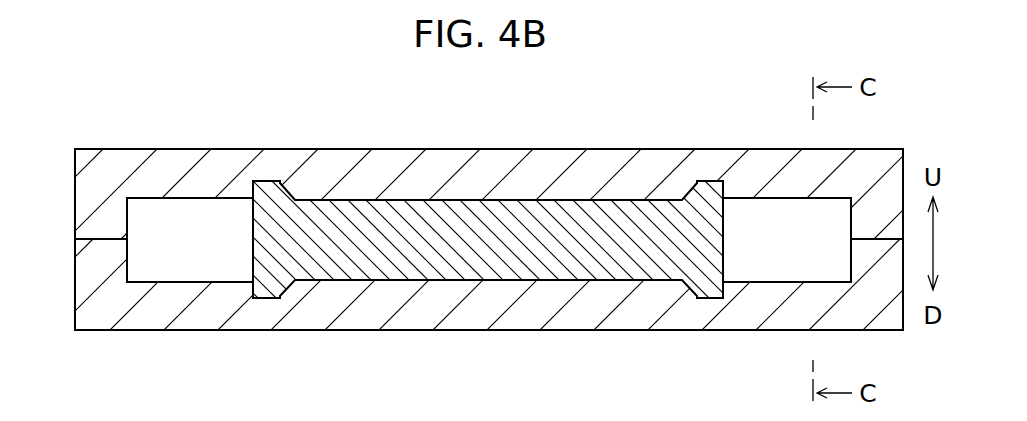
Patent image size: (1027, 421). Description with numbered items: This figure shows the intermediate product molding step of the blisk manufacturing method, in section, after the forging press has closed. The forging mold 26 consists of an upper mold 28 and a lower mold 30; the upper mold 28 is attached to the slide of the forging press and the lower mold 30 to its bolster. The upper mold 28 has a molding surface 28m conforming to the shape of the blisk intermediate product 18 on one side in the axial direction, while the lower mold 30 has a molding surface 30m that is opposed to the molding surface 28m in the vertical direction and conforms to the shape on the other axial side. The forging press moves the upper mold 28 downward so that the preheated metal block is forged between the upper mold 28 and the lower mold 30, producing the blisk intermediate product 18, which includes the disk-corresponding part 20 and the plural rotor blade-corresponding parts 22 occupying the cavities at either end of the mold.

The forging mold 26 is at (88, 84).
The upper mold 28 is at (93, 168).
The lower mold 30 is at (157, 298).
The rotor blade-corresponding part 22 is at (218, 212).
The blisk intermediate product 18 is at (468, 200).
The disk-corresponding part 20 is at (457, 280).
The molding surface 28m is at (564, 199).
The molding surface 30m is at (376, 277).